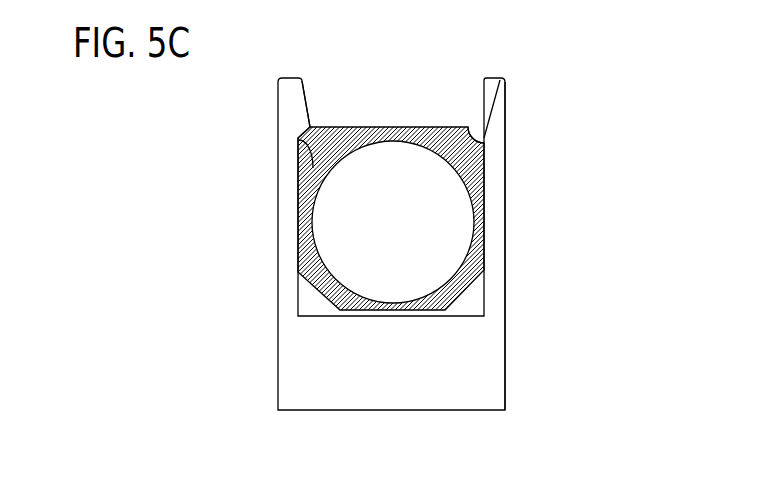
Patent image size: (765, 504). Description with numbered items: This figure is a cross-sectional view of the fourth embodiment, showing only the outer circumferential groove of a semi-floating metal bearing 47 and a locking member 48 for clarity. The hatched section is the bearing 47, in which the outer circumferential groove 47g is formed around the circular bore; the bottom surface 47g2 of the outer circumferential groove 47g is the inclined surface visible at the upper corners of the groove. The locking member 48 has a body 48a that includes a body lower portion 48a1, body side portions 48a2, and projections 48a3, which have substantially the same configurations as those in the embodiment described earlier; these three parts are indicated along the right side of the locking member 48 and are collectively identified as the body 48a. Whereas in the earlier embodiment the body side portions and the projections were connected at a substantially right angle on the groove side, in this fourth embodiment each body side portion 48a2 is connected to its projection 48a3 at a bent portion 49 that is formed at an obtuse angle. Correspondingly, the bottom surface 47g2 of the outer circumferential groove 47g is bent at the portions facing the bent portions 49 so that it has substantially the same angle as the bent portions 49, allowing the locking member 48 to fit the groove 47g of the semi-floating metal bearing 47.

The semi-floating metal bearing 47 is at (349, 111).
The outer circumferential groove 47g is at (380, 127).
The bottom surface 47g2 is at (278, 127).
The bent portion 49 is at (300, 176).
The locking member 48 is at (476, 244).
The body 48a is at (607, 176).
The body lower portion 48a1 is at (505, 360).
The body side portion 48a2 is at (505, 220).
The projection 48a3 is at (505, 107).